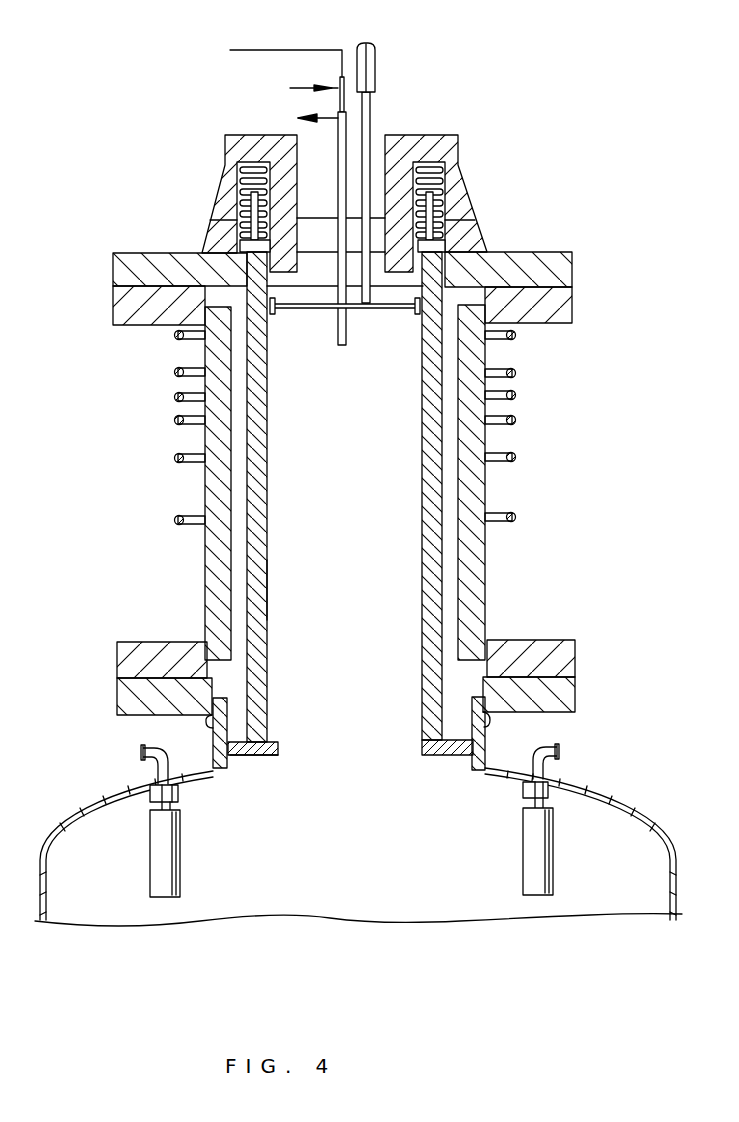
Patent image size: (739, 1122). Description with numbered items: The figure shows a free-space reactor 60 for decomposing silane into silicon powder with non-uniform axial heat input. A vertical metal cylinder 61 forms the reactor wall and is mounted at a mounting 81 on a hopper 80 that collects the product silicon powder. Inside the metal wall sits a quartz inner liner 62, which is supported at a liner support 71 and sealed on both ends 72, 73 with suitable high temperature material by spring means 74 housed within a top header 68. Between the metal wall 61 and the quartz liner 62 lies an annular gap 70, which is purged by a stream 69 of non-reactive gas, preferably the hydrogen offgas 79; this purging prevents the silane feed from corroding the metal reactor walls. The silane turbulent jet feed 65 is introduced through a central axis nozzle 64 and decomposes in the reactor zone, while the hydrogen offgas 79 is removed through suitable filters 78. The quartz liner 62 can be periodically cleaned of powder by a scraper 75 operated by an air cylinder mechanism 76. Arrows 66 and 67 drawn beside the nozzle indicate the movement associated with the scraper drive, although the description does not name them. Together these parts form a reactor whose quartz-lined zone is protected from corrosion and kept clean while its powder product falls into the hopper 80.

The free-space reactor 60 is at (150, 471).
The vertical metal cylinder 61 is at (214, 481).
The quartz inner liner 62 is at (269, 589).
The central axis nozzle 64 is at (348, 318).
The silane turbulent jet feed 65 is at (283, 49).
The upward movement arrow 66 is at (300, 90).
The downward movement arrow 67 is at (300, 118).
The top header 68 is at (124, 253).
The purge stream 69 is at (203, 246).
The annular gap 70 is at (246, 424).
The liner support 71 is at (256, 757).
The liner end seal 72 is at (271, 741).
The liner end seal 73 is at (238, 248).
The spring means 74 is at (237, 172).
The scraper 75 is at (320, 310).
The air cylinder mechanism 76 is at (373, 109).
The filter 78 is at (180, 840).
The hydrogen offgas 79 is at (145, 746).
The hopper 80 is at (72, 813).
The mounting 81 is at (117, 698).